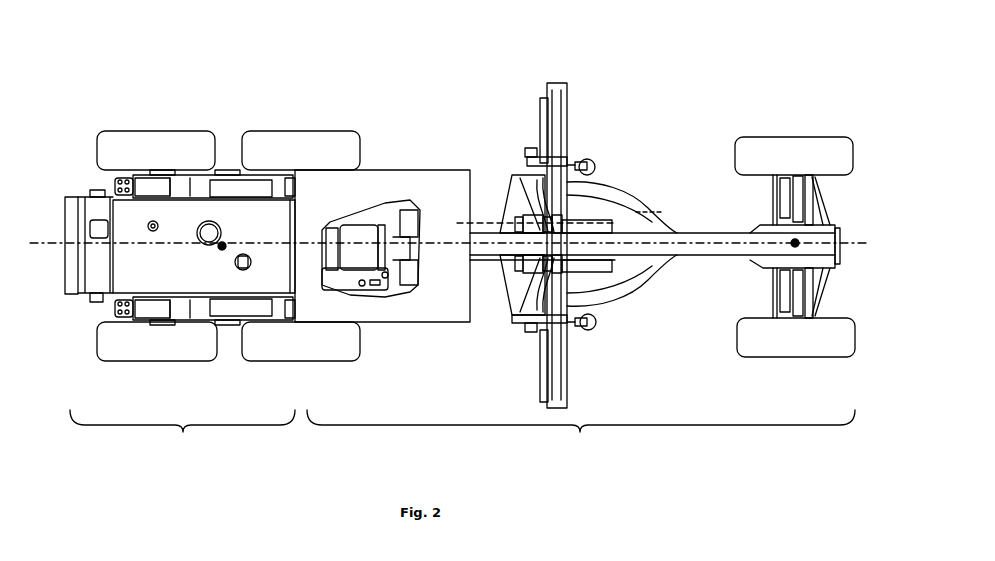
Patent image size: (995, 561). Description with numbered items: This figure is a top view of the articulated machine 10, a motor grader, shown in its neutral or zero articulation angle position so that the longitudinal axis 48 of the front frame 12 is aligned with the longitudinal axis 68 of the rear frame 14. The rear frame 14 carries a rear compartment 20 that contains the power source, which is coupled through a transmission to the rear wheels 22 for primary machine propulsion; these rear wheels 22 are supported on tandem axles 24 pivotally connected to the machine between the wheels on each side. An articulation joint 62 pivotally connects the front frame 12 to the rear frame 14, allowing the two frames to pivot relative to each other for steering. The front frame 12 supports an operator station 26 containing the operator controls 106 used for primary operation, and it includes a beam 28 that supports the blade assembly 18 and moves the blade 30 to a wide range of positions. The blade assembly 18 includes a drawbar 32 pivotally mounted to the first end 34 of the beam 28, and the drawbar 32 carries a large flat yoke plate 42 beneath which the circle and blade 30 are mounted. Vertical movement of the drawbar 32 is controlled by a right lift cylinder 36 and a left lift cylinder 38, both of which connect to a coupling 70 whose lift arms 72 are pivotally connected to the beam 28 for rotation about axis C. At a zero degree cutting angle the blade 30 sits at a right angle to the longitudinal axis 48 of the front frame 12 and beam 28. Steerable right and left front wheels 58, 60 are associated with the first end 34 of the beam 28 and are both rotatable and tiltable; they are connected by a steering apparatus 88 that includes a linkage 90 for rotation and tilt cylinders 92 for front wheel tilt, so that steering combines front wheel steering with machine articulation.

The articulated machine 10 is at (500, 37).
The front frame 12 is at (581, 432).
The rear frame 14 is at (182, 432).
The blade assembly 18 is at (652, 128).
The rear compartment 20 is at (122, 263).
The rear wheels 22 is at (130, 130).
The tandem axles 24 is at (228, 160).
The operator station 26 is at (443, 170).
The beam 28 is at (718, 262).
The blade 30 is at (568, 90).
The drawbar 32 is at (623, 192).
The first end of the beam 34 is at (815, 238).
The right lift cylinder 36 is at (592, 330).
The left lift cylinder 38 is at (591, 160).
The yoke plate 42 is at (632, 295).
The longitudinal axis of the front frame 48 is at (843, 245).
The right front wheel 58 is at (778, 358).
The left front wheel 60 is at (773, 137).
The articulation joint 62 is at (310, 218).
The longitudinal axis of the rear frame 68 is at (55, 245).
The coupling 70 is at (515, 222).
The lift arms 72 is at (532, 158).
The steering apparatus 88 is at (751, 188).
The linkage 90 is at (773, 208).
The tilt cylinders 92 is at (795, 289).
The operator controls 106 is at (398, 225).
The axis C is at (656, 212).